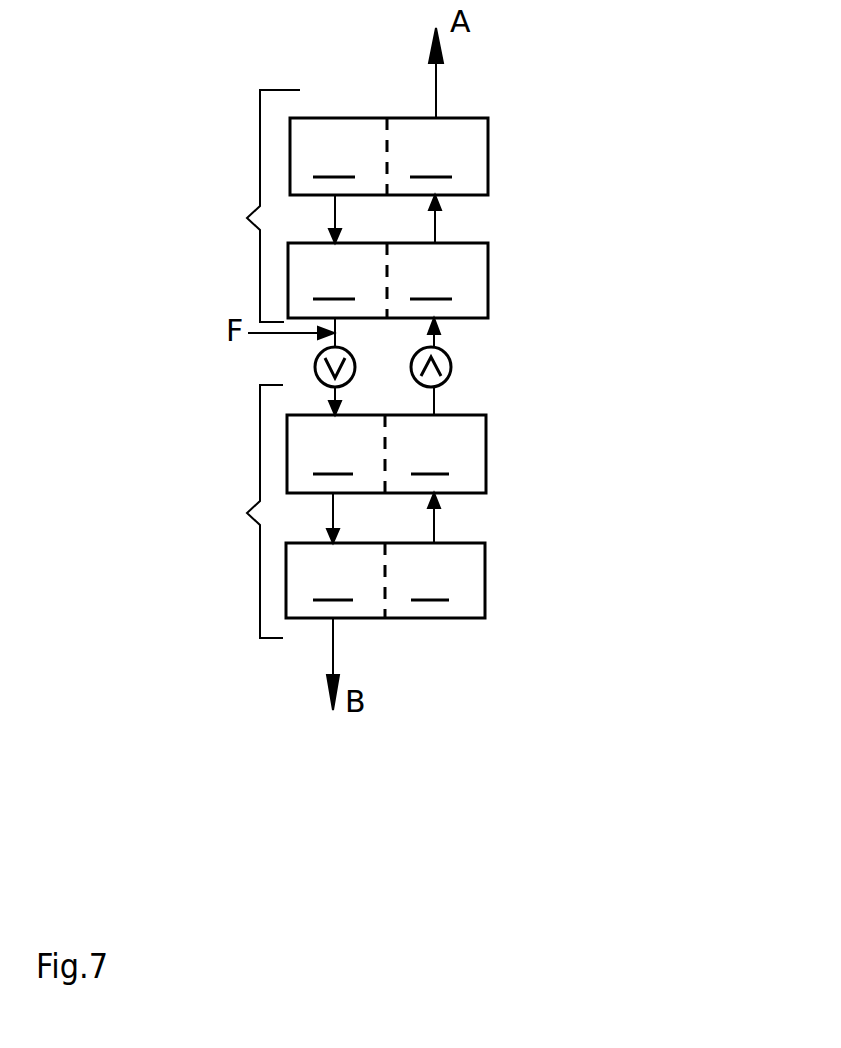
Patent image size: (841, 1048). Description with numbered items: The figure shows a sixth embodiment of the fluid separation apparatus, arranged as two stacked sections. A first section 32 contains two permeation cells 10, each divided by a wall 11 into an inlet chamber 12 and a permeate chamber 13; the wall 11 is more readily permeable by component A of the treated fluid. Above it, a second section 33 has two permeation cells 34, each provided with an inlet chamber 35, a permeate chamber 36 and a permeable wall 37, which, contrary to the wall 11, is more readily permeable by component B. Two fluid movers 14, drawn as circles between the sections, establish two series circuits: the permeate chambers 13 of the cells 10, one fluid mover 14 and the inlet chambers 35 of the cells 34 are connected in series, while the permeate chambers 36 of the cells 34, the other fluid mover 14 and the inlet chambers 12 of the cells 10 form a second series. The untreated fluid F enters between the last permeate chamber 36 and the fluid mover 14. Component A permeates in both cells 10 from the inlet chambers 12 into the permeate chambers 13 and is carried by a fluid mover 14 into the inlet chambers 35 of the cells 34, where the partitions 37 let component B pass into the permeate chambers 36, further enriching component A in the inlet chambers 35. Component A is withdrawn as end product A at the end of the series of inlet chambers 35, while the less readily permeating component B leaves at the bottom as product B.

The permeation cell 10 is at (487, 458).
The wall 11 is at (386, 432).
The inlet chamber 12 is at (333, 522).
The permeate chamber 13 is at (430, 522).
The fluid mover 14 is at (315, 368).
The first section 32 is at (245, 511).
The second section 33 is at (254, 206).
The permeation cell 34 is at (488, 157).
The inlet chamber 35 is at (431, 223).
The permeate chamber 36 is at (334, 223).
The permeable wall 37 is at (388, 133).